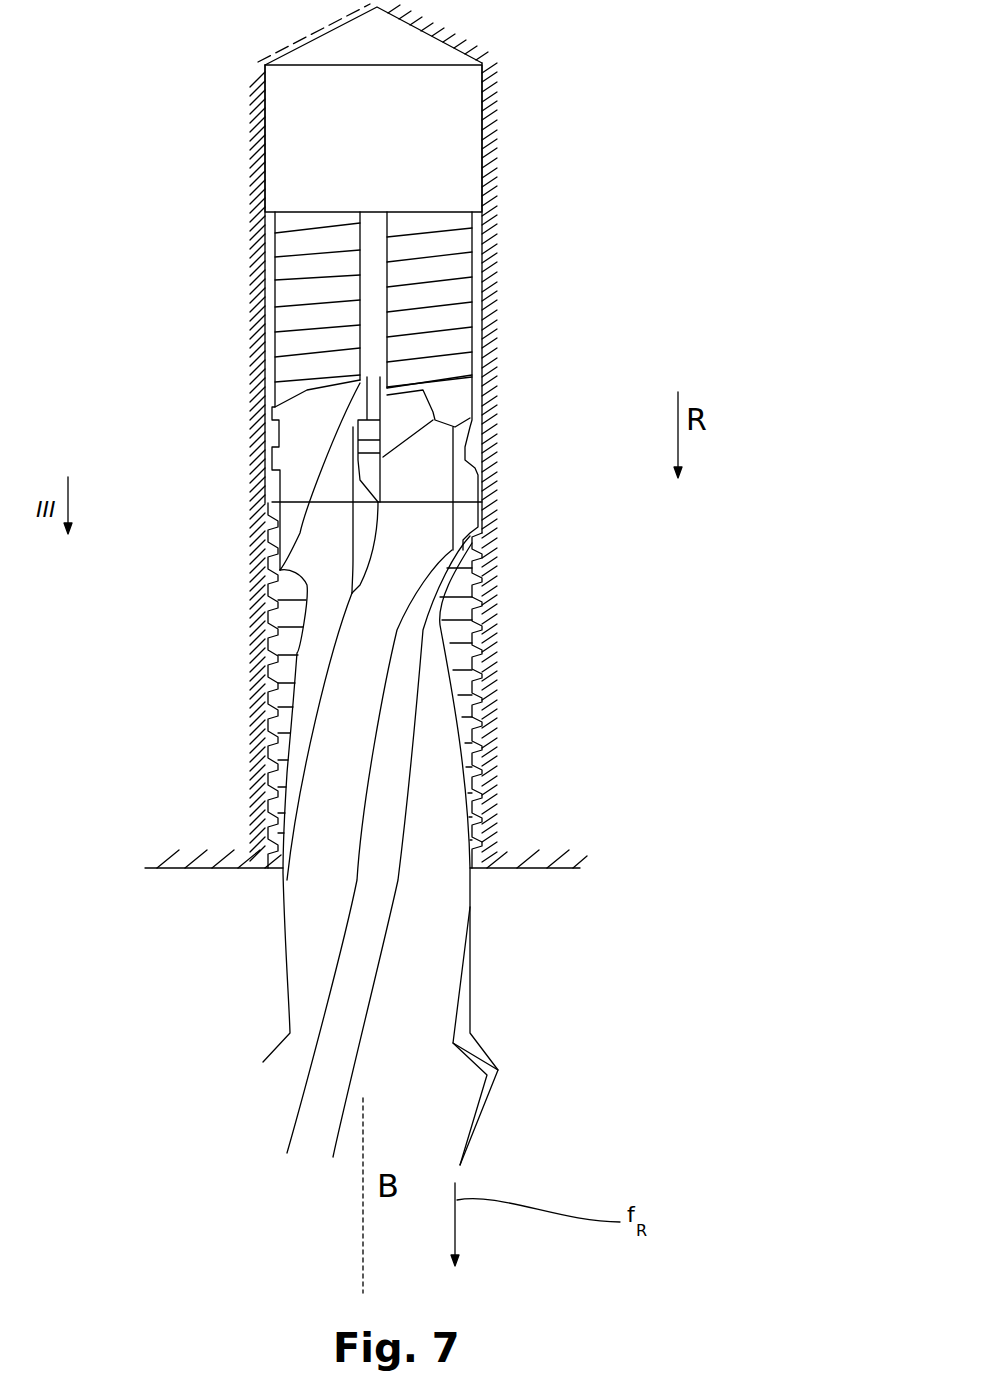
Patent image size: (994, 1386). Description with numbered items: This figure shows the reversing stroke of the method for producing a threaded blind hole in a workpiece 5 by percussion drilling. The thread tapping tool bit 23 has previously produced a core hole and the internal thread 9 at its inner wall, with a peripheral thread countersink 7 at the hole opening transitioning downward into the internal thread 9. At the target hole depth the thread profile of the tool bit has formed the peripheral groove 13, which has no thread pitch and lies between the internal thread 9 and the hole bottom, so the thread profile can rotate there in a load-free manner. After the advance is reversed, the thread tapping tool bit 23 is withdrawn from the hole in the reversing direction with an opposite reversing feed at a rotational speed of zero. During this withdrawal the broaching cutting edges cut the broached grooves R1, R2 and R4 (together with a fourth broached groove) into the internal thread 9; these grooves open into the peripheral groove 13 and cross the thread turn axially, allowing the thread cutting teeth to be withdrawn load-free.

The peripheral groove 13 is at (389, 146).
The broached groove R1 is at (367, 273).
The broached groove R2 is at (387, 268).
The broached groove R4 is at (272, 274).
The internal thread 9 is at (485, 297).
The thread countersink 7 is at (493, 862).
The workpiece 5 is at (190, 868).
The thread tapping tool bit 23 is at (280, 943).